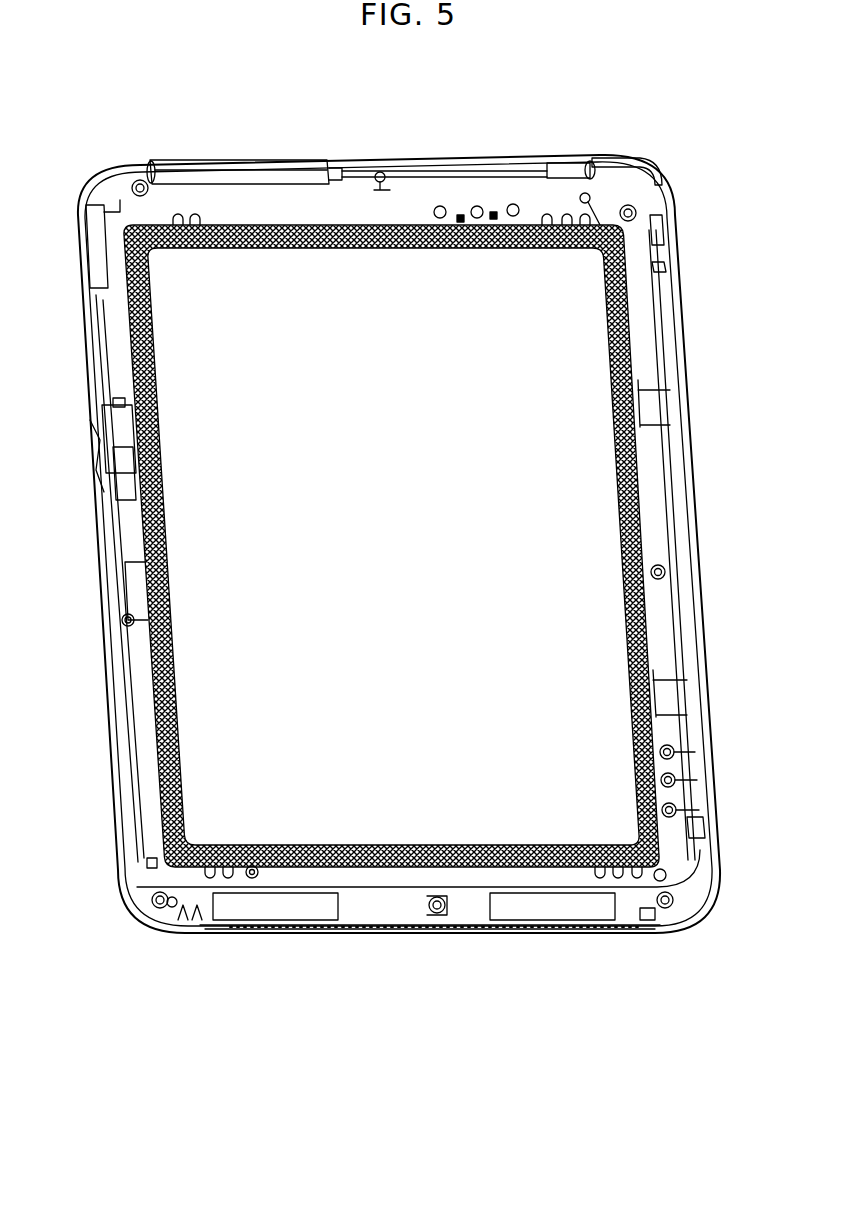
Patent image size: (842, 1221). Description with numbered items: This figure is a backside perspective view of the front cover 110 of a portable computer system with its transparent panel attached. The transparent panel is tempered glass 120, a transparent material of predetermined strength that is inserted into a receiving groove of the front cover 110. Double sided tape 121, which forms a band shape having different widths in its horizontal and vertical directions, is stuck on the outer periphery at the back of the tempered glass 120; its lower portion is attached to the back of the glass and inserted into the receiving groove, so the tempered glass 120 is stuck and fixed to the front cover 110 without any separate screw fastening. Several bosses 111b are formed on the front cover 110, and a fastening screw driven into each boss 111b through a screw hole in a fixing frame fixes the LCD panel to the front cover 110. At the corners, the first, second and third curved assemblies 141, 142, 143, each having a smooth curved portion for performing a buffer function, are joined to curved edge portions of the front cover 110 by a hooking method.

The front cover 110 is at (712, 290).
The boss 111b is at (133, 190).
The tempered glass 120 is at (590, 640).
The double sided tape 121 is at (633, 470).
The first curved assembly 141 is at (112, 905).
The second curved assembly 142 is at (702, 915).
The third curved assembly 143 is at (642, 160).